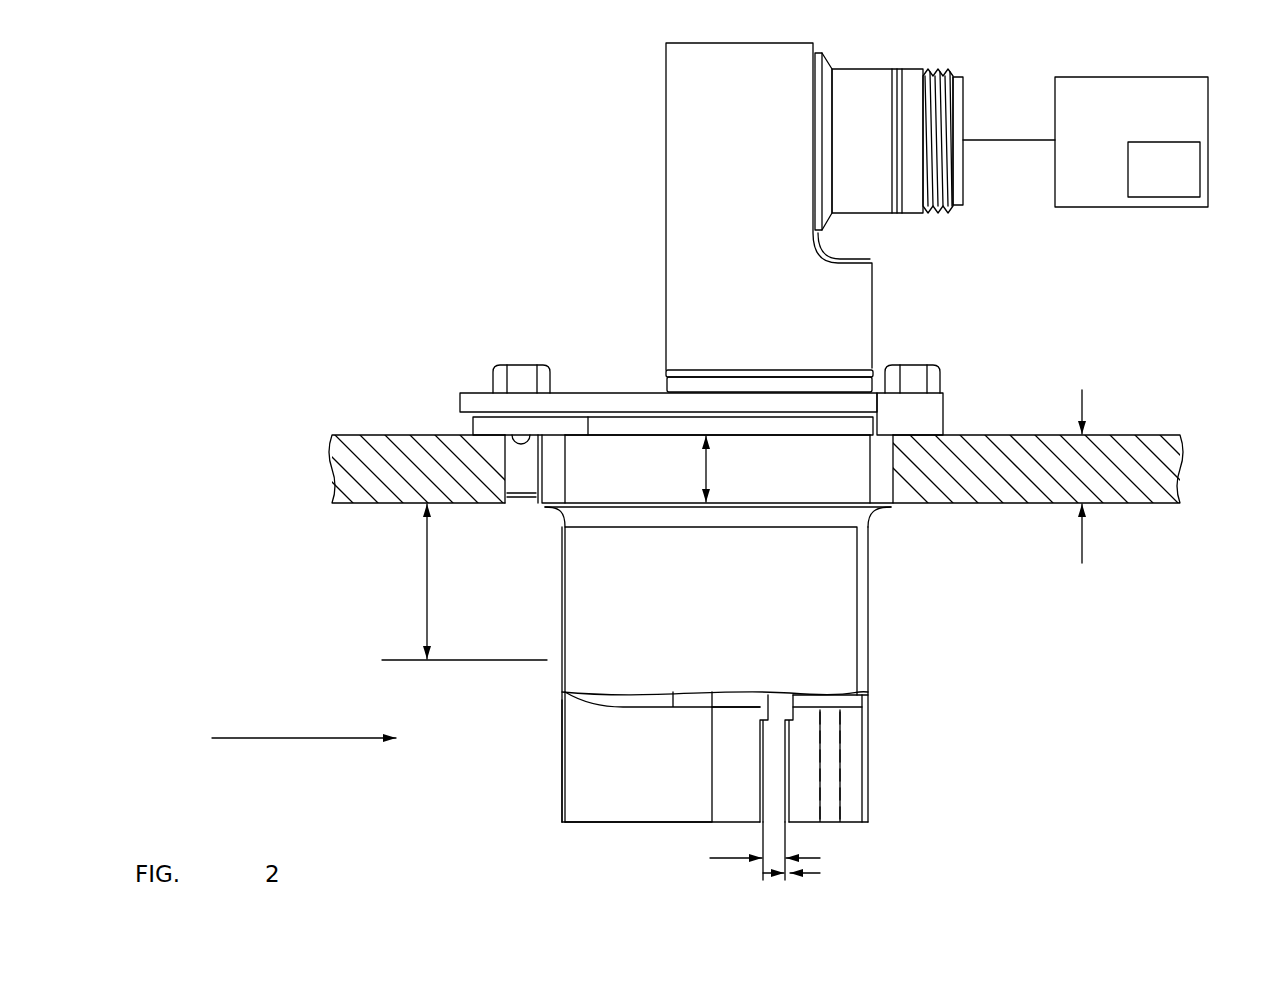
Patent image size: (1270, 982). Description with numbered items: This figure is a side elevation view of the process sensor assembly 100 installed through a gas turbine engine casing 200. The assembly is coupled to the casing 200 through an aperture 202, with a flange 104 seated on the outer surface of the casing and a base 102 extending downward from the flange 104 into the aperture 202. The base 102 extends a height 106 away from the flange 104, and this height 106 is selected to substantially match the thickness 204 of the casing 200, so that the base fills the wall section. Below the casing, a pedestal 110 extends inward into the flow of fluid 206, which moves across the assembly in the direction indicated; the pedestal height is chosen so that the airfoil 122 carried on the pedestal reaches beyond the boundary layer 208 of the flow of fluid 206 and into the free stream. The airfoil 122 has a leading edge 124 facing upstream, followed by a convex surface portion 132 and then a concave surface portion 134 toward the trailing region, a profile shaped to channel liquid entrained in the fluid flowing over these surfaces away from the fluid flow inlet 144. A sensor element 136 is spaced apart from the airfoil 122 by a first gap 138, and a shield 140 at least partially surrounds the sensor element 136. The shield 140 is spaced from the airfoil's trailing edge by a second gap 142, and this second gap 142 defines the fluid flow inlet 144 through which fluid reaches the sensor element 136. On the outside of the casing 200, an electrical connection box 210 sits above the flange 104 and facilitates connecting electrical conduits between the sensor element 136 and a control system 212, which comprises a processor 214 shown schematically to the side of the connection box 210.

The process sensor assembly 100 is at (360, 158).
The base 102 is at (870, 503).
The flange 104 is at (513, 440).
The height 106 is at (710, 473).
The pedestal 110 is at (683, 613).
The airfoil 122 is at (598, 823).
The leading edge 124 is at (562, 743).
The convex surface portion 132 is at (618, 790).
The concave surface portion 134 is at (737, 762).
The sensor element 136 is at (828, 760).
The first gap 138 is at (793, 877).
The shield 140 is at (850, 723).
The second gap 142 is at (730, 860).
The fluid flow inlet 144 is at (770, 776).
The gas turbine engine casing 200 is at (1127, 445).
The aperture 202 is at (840, 470).
The thickness 204 is at (1083, 547).
The flow of fluid 206 is at (268, 738).
The boundary layer 208 is at (427, 587).
The electrical connection box 210 is at (722, 200).
The control system 212 is at (1150, 77).
The processor 214 is at (1168, 142).